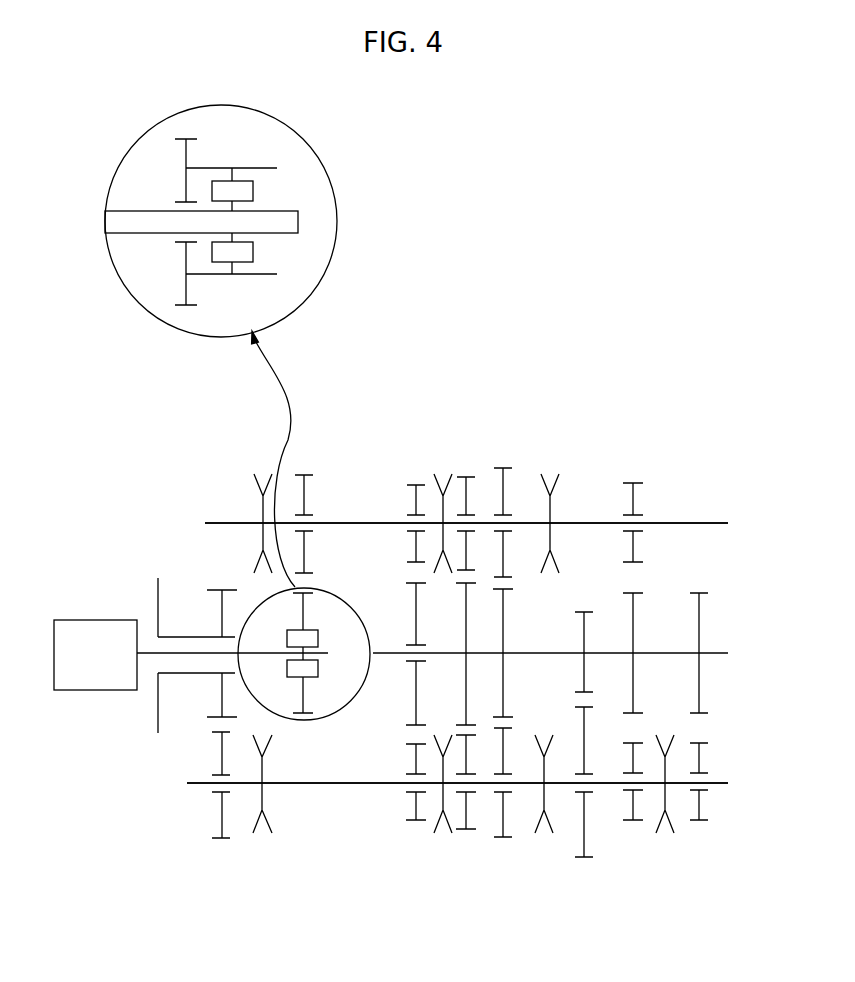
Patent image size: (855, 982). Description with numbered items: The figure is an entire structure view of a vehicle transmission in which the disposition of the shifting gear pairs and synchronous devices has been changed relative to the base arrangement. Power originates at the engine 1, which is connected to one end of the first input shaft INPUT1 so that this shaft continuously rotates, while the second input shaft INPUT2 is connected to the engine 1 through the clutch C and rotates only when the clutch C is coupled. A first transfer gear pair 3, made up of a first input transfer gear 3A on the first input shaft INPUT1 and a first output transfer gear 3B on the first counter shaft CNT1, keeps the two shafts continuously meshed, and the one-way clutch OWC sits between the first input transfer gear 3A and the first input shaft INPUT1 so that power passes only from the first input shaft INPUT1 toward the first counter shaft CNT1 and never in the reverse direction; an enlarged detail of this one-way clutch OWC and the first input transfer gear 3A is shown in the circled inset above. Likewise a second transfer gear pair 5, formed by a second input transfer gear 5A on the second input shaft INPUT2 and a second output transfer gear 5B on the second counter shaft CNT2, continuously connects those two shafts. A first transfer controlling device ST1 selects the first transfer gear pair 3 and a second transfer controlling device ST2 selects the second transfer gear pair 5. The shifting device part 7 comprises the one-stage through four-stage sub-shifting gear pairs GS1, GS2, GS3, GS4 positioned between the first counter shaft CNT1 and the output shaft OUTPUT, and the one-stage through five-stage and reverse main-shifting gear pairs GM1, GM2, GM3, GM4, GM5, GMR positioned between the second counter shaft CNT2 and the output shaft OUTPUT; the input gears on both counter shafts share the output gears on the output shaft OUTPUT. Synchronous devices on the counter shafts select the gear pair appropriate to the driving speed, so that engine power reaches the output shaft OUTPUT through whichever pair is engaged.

The engine 1 is at (88, 690).
The clutch C is at (158, 713).
The first input shaft INPUT1 is at (155, 223).
The second input shaft INPUT2 is at (185, 637).
The first transfer gear pair 3 is at (342, 464).
The first input transfer gear 3A is at (185, 153).
The first output transfer gear 3B is at (305, 493).
The one-way clutch OWC is at (253, 192).
The second transfer gear pair 5 is at (156, 793).
The second input transfer gear 5A is at (222, 702).
The second output transfer gear 5B is at (218, 815).
The shifting device part 7 is at (488, 434).
The first transfer controlling device ST1 is at (257, 488).
The second transfer controlling device ST2 is at (260, 820).
The first counter shaft CNT1 is at (695, 523).
The second counter shaft CNT2 is at (717, 783).
The output shaft OUTPUT is at (712, 652).
The 1-stage sub-shifting gear pair GS1 is at (634, 512).
The 2-stage sub-shifting gear pair GS2 is at (416, 513).
The 3-stage sub-shifting gear pair GS3 is at (464, 513).
The 4-stage sub-shifting gear pair GS4 is at (503, 513).
The 1-stage main-shifting gear pair GM1 is at (634, 795).
The 2-stage main-shifting gear pair GM2 is at (413, 796).
The 3-stage main-shifting gear pair GM3 is at (466, 794).
The 4-stage main-shifting gear pair GM4 is at (506, 795).
The 5-stage main-shifting gear pair GM5 is at (585, 794).
The R-stage main-shifting gear pair GMR is at (698, 795).